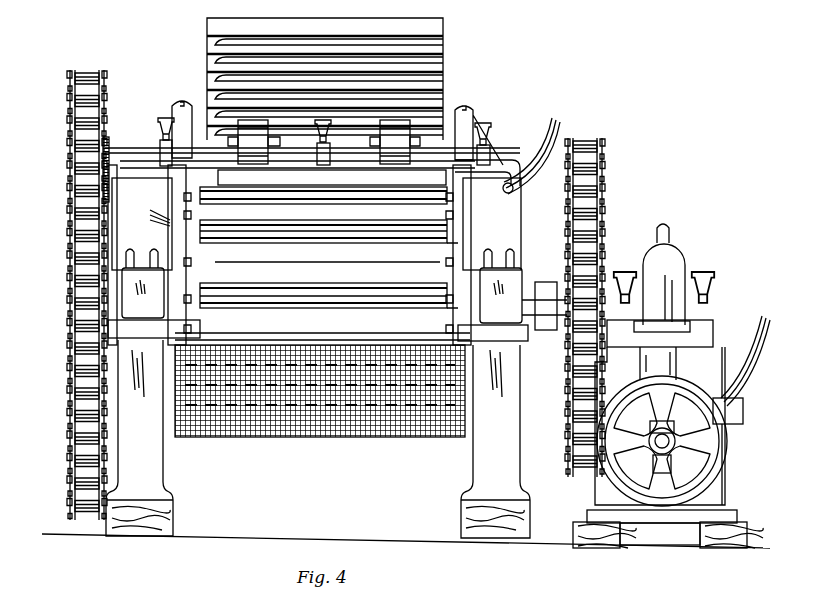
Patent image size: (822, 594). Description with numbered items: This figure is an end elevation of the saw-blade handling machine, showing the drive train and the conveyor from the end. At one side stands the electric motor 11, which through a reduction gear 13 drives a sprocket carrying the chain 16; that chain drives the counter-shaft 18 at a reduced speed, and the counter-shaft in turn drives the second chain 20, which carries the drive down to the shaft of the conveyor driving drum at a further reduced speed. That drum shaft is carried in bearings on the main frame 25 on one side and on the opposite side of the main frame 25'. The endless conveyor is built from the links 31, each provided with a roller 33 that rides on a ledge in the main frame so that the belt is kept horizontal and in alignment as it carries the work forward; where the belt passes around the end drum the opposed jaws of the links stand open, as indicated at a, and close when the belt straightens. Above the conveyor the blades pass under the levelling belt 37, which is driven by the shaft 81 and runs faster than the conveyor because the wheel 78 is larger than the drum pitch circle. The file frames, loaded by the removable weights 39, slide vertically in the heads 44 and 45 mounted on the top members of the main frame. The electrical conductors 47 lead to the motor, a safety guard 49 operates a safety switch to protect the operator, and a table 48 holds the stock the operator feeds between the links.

The electric motor 11 is at (718, 478).
The reduction gear 13 is at (672, 262).
The chain 16 is at (566, 420).
The counter-shaft 18 is at (546, 295).
The chain 20 is at (66, 452).
The main frame 25 is at (154, 438).
The main frame 25' is at (481, 441).
The links 31 is at (329, 249).
The roller 33 is at (168, 200).
The levelling belt 37 is at (383, 186).
The removable weights 39 is at (437, 54).
The head 44 is at (472, 116).
The head 45 is at (180, 113).
The electrical conductors 47 is at (758, 320).
The table 48 is at (334, 346).
The safety guard 49 is at (354, 199).
The wheel 78 is at (99, 351).
The shaft 81 is at (136, 148).
The open jaw position a is at (414, 300).